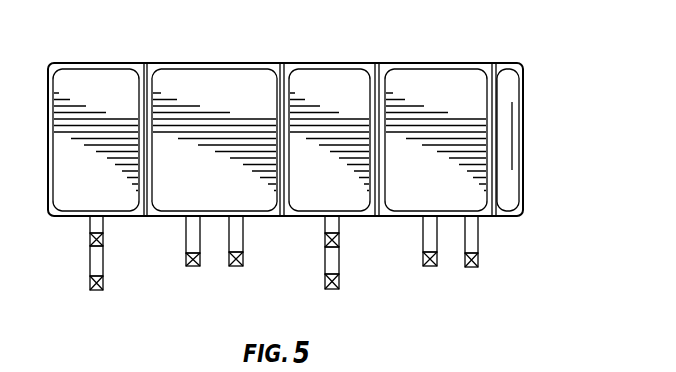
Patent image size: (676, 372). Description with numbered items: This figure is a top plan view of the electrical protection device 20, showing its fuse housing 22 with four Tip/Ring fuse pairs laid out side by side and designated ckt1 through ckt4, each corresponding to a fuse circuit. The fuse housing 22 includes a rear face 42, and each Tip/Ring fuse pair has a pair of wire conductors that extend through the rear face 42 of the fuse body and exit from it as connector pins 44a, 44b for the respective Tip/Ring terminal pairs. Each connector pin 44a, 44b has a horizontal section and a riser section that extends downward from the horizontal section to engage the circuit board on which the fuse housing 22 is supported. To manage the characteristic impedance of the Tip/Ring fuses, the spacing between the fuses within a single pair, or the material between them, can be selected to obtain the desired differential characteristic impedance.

The electrical protection device 20 is at (537, 68).
The fuse housing 22 is at (521, 140).
The rear face 42 is at (493, 218).
The connector pin 44a is at (89, 280).
The connector pin 44b is at (89, 237).